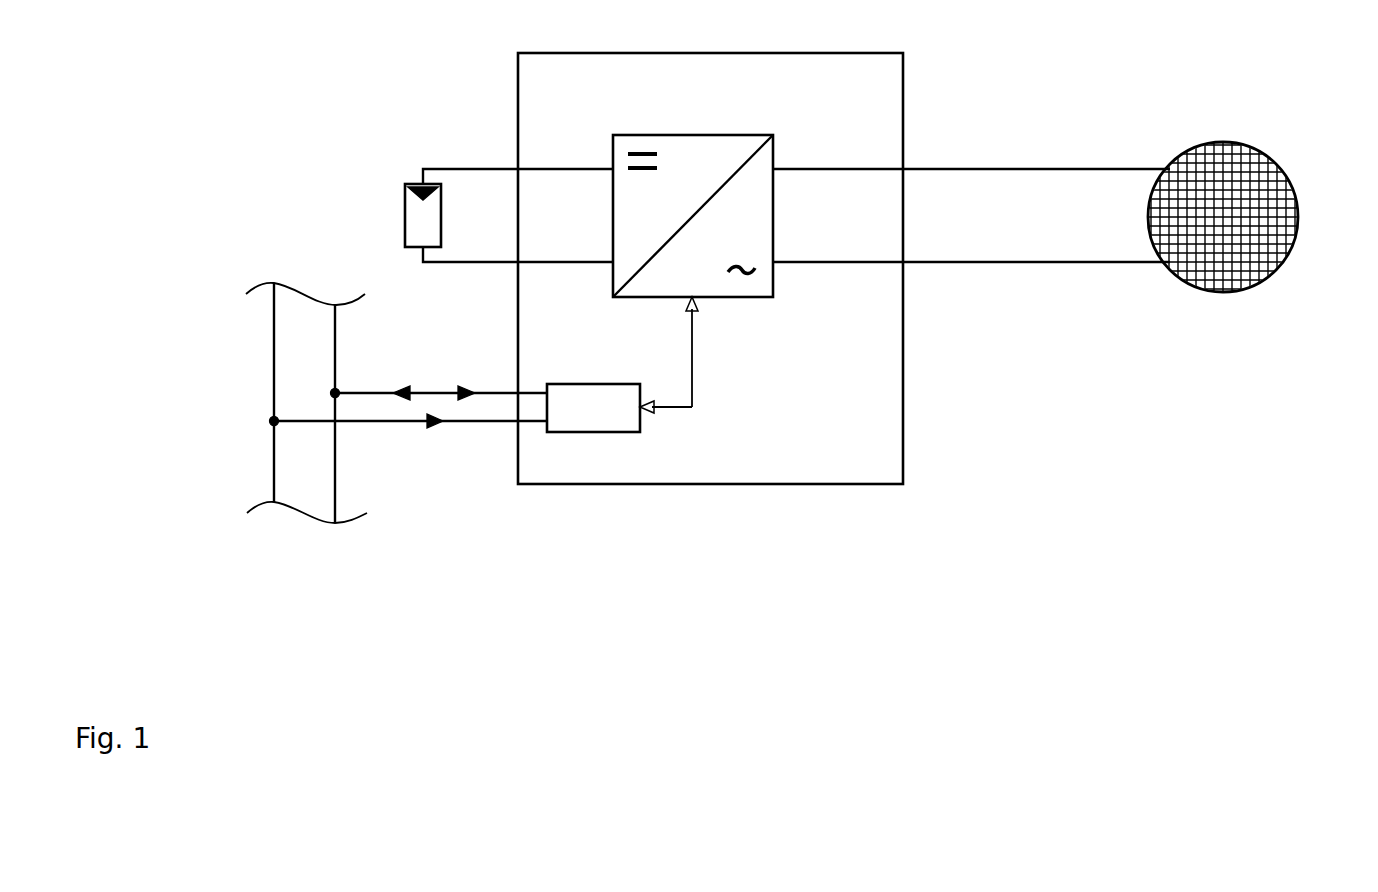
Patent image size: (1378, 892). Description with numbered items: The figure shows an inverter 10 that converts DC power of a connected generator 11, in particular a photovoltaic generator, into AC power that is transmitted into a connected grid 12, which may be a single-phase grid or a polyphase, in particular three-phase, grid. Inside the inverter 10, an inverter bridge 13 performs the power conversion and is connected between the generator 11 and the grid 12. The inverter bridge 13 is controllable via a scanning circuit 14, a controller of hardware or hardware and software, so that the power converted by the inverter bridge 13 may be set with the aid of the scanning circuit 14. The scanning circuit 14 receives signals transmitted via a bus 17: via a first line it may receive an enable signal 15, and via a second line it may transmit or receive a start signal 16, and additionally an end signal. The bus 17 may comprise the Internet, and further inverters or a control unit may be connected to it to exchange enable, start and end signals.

The inverter 10 is at (723, 53).
The generator 11 is at (405, 218).
The grid 12 is at (1270, 180).
The inverter bridge 13 is at (773, 155).
The scanning circuit 14 is at (597, 393).
The enable signal 15 is at (497, 423).
The start signal 16 is at (497, 392).
The bus 17 is at (233, 427).